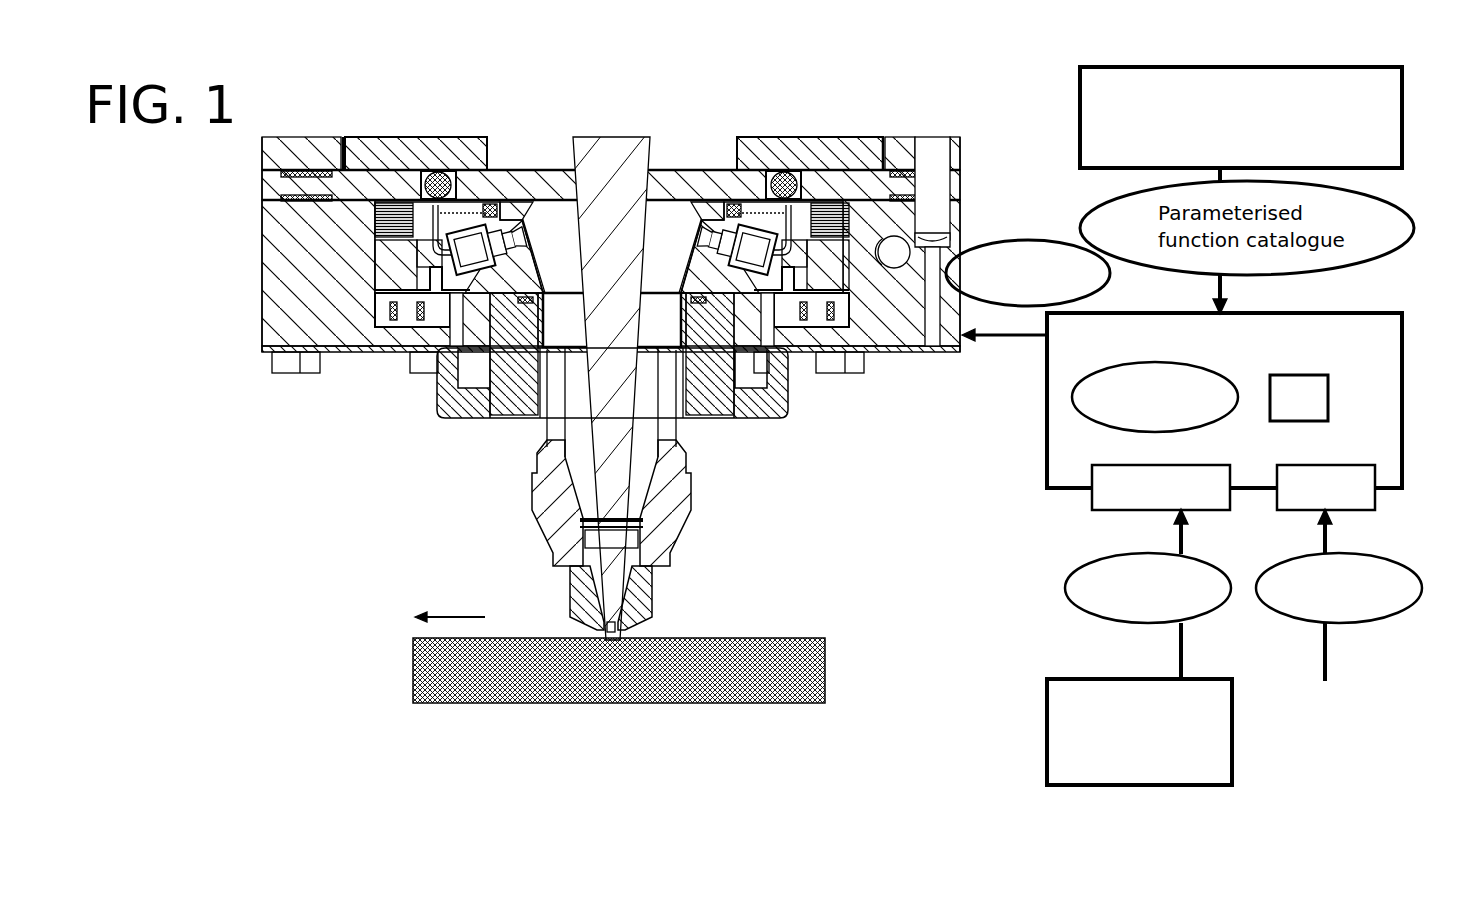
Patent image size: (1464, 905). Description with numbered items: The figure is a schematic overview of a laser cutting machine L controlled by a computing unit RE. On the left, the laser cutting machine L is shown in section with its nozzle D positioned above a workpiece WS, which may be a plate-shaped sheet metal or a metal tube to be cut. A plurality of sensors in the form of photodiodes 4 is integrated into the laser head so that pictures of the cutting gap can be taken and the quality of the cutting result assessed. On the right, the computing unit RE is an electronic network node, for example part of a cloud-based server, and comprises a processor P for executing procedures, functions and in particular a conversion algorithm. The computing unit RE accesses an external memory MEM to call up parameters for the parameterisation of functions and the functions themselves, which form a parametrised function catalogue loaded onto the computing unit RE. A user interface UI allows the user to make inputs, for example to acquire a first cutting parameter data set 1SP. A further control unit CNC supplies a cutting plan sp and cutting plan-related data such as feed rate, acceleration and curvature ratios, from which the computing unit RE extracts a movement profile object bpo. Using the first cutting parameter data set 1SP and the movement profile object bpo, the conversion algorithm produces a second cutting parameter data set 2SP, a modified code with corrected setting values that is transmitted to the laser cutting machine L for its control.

The photodiodes 4 is at (470, 250).
The nozzle D is at (640, 597).
The workpiece WS is at (800, 673).
The laser cutting machine L is at (283, 468).
The external memory MEM is at (1241, 117).
The computing unit RE is at (1367, 313).
The movement profile object bpo is at (1155, 397).
The processor P is at (1299, 398).
The process control PS is at (1161, 487).
The user interface UI is at (1326, 487).
The cutting plan sp is at (1148, 594).
The first cutting parameter data set 1SP is at (1339, 595).
The second cutting parameter data set 2SP is at (1028, 273).
The further control unit CNC is at (1139, 732).